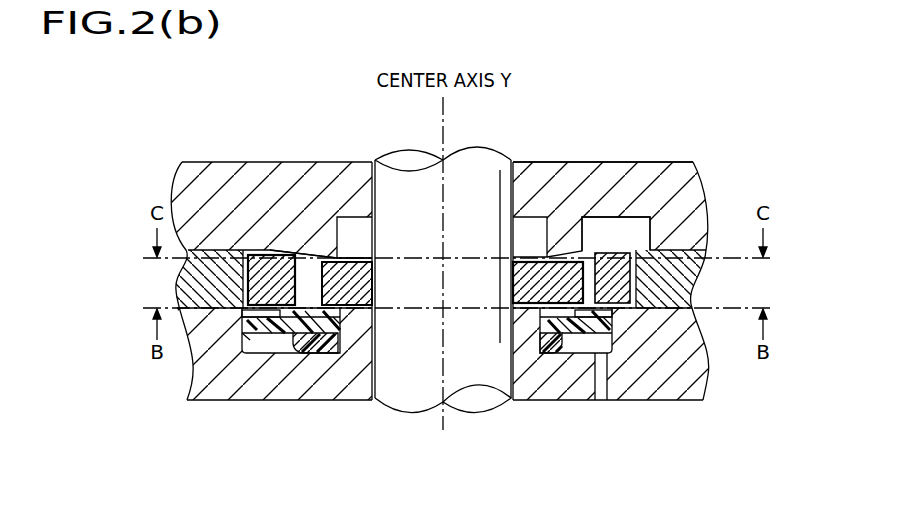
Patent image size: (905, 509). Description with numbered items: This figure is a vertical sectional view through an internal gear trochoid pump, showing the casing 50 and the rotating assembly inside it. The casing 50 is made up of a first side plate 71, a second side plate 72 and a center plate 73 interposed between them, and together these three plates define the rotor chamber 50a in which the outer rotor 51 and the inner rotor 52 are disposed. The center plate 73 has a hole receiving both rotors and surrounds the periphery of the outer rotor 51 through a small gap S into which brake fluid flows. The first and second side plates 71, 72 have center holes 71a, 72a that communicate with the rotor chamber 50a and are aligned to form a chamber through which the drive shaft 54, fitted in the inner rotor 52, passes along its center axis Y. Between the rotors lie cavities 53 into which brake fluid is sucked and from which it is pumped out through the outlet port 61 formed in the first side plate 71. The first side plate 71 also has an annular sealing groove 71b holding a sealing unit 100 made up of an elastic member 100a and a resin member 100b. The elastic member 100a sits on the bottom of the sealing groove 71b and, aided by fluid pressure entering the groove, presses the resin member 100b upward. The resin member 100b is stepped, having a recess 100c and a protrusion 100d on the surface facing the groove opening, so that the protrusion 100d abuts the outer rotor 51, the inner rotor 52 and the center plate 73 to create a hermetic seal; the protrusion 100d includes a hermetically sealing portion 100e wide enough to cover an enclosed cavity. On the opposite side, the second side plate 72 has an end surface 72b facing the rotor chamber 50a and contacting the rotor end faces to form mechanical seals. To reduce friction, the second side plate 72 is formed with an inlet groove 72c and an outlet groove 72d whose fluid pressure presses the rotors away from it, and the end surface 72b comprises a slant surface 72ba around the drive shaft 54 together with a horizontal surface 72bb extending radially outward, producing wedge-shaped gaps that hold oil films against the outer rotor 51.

The casing 50 is at (691, 188).
The rotor chamber 50a is at (213, 250).
The outer rotor 51 is at (590, 290).
The inner rotor 52 is at (560, 235).
The cavities 53 is at (648, 301).
The drive shaft 54 is at (470, 183).
The outlet port 61 is at (604, 372).
The first side plate 71 is at (355, 380).
The center hole 71a is at (500, 355).
The sealing groove 71b is at (243, 356).
The second side plate 72 is at (652, 175).
The center hole 72a is at (514, 173).
The end surface 72b is at (367, 80).
The slant surface 72ba is at (279, 256).
The horizontal surface 72bb is at (247, 252).
The inlet groove 72c is at (353, 230).
The outlet groove 72d is at (606, 227).
The center plate 73 is at (200, 276).
The sealing unit 100 is at (242, 447).
The elastic member 100a is at (310, 352).
The resin member 100b is at (267, 330).
The recess 100c is at (213, 366).
The protrusion 100d is at (253, 346).
The hermetically sealing portion 100e is at (305, 310).
The gap S is at (243, 255).